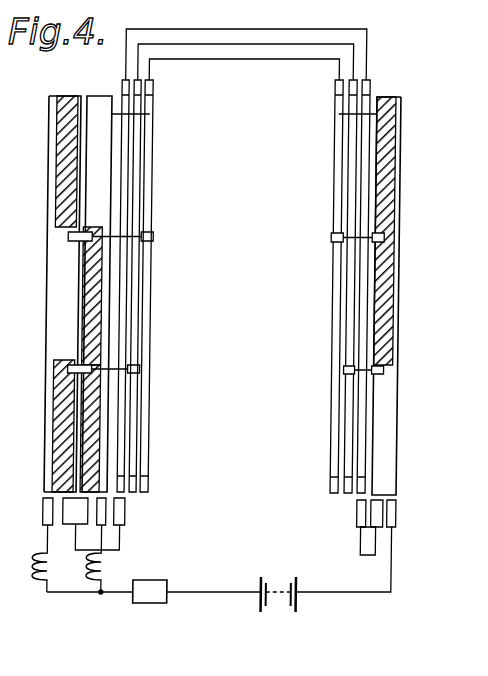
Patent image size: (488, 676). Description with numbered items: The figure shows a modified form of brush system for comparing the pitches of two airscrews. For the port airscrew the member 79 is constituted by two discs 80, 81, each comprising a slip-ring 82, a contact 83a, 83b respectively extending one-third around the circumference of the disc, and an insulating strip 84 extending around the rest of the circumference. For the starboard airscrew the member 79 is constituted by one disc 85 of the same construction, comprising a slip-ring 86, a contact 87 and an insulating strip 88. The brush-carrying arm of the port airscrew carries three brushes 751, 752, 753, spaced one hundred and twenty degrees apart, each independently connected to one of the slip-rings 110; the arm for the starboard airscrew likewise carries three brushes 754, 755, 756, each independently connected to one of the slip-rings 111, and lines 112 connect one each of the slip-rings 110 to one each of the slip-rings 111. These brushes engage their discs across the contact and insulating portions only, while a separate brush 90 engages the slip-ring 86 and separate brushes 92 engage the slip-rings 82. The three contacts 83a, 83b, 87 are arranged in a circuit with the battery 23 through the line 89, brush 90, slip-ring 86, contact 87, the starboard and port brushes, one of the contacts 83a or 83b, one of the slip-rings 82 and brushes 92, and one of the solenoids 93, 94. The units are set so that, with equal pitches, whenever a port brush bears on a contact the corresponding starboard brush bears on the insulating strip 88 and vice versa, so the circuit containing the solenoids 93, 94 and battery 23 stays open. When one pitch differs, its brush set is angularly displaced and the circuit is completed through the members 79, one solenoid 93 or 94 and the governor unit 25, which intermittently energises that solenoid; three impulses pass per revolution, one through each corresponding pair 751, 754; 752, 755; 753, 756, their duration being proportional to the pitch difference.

The member 79 is at (221, 275).
The disc 80 is at (58, 96).
The disc 81 is at (97, 97).
The slip-ring 82 is at (49, 201).
The contact 83a is at (58, 302).
The contact 83b is at (58, 220).
The insulating strip 84 is at (58, 145).
The disc 85 is at (398, 97).
The slip-ring 86 is at (401, 338).
The contact 87 is at (401, 421).
The insulating strip 88 is at (401, 166).
The line 89 is at (338, 590).
The brush 90 is at (5, 469).
The brush 92 is at (48, 521).
The solenoid 93 is at (42, 563).
The solenoid 94 is at (112, 571).
The slip-rings 110 is at (125, 153).
The slip-rings 111 is at (366, 165).
The connecting wires 112 is at (243, 30).
The brush 751 is at (70, 499).
The brush 752 is at (68, 363).
The brush 753 is at (68, 241).
The brush 754 is at (391, 496).
The brush 755 is at (385, 373).
The brush 756 is at (392, 226).
The governor unit 25 is at (167, 580).
The battery 23 is at (278, 588).